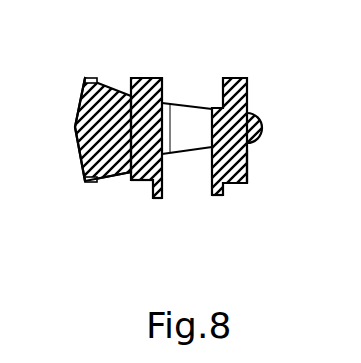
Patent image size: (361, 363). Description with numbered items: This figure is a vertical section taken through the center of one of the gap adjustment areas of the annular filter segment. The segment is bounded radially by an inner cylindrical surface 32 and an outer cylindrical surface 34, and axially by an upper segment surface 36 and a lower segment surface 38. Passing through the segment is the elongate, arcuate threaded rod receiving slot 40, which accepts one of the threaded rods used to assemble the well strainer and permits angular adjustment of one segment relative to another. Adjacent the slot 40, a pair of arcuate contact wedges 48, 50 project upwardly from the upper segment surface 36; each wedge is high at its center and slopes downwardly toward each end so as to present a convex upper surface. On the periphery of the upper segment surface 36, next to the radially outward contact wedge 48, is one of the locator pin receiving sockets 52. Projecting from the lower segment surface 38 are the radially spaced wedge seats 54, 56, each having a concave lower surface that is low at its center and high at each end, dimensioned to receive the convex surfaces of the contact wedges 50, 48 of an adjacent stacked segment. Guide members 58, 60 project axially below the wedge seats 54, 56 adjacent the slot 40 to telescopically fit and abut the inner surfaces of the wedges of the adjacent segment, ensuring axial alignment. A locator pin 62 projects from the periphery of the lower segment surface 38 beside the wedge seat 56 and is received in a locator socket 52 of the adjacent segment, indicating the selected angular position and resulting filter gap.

The inner cylindrical surface 32 is at (262, 130).
The outer cylindrical surface 34 is at (76, 120).
The upper segment surface 36 is at (116, 84).
The lower segment surface 38 is at (113, 175).
The threaded rod receiving slot 40 is at (172, 120).
The contact wedge 48 is at (145, 78).
The contact wedge 50 is at (232, 78).
The locator pin receiving socket 52 is at (88, 78).
The wedge seat 54 is at (247, 168).
The wedge seat 56 is at (139, 181).
The guide member 58 is at (217, 195).
The guide member 60 is at (161, 198).
The locator pin 62 is at (92, 185).